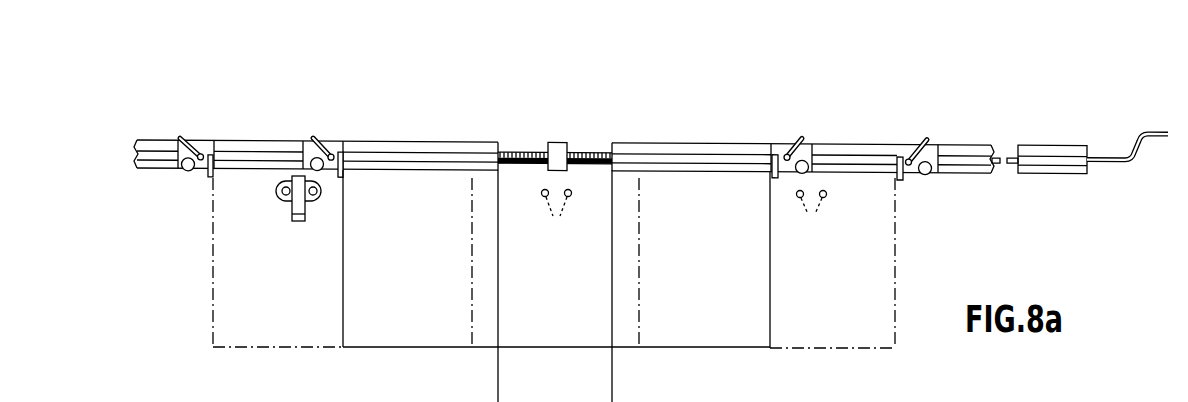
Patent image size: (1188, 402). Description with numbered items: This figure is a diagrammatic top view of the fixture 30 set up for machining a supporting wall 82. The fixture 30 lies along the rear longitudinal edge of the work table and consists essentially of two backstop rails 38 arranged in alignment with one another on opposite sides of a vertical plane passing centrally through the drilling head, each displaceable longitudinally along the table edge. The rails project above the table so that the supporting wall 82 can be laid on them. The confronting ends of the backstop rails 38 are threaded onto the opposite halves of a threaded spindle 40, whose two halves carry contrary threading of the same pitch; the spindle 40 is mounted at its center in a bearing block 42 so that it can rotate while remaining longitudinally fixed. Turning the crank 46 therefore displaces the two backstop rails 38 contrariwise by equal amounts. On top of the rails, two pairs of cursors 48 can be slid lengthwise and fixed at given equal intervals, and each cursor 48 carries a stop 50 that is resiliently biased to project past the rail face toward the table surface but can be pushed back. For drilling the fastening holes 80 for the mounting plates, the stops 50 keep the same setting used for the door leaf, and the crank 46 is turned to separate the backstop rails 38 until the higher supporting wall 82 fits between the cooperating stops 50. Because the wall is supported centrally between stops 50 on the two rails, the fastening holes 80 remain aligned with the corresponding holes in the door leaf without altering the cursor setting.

The fixture 30 is at (709, 90).
The backstop rails 38 is at (248, 130).
The threaded spindle 40 is at (527, 152).
The bearing block 42 is at (558, 148).
The crank 46 is at (1148, 131).
The cursors 48 is at (178, 140).
The stop 50 is at (342, 170).
The fastening holes 80 is at (684, 216).
The supporting wall 82 is at (265, 322).